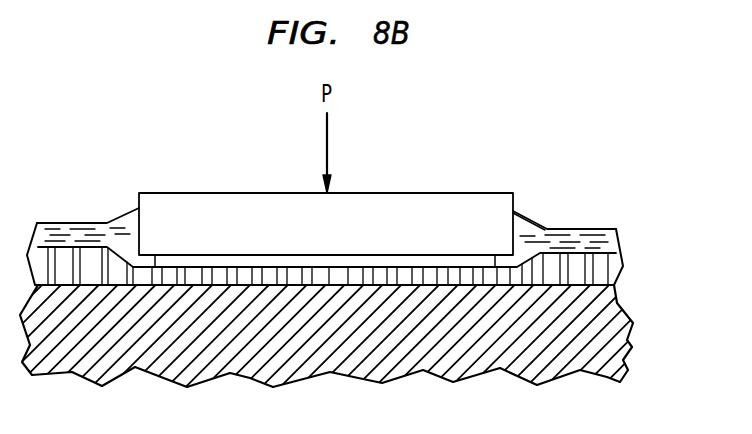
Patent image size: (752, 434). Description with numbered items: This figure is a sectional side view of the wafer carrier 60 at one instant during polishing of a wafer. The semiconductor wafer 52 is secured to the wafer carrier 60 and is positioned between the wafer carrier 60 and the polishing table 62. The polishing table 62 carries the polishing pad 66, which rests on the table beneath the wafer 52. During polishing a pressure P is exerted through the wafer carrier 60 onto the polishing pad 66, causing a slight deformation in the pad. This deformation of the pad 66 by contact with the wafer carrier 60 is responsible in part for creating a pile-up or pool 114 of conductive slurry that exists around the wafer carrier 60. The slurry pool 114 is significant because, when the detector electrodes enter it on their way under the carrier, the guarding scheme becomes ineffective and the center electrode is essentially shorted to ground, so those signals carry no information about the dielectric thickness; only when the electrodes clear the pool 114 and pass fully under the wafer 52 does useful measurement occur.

The semiconductor wafer 52 is at (206, 262).
The wafer carrier 60 is at (455, 215).
The polishing table 62 is at (632, 343).
The polishing pad 66 is at (623, 267).
The pool of slurry 114 is at (543, 227).